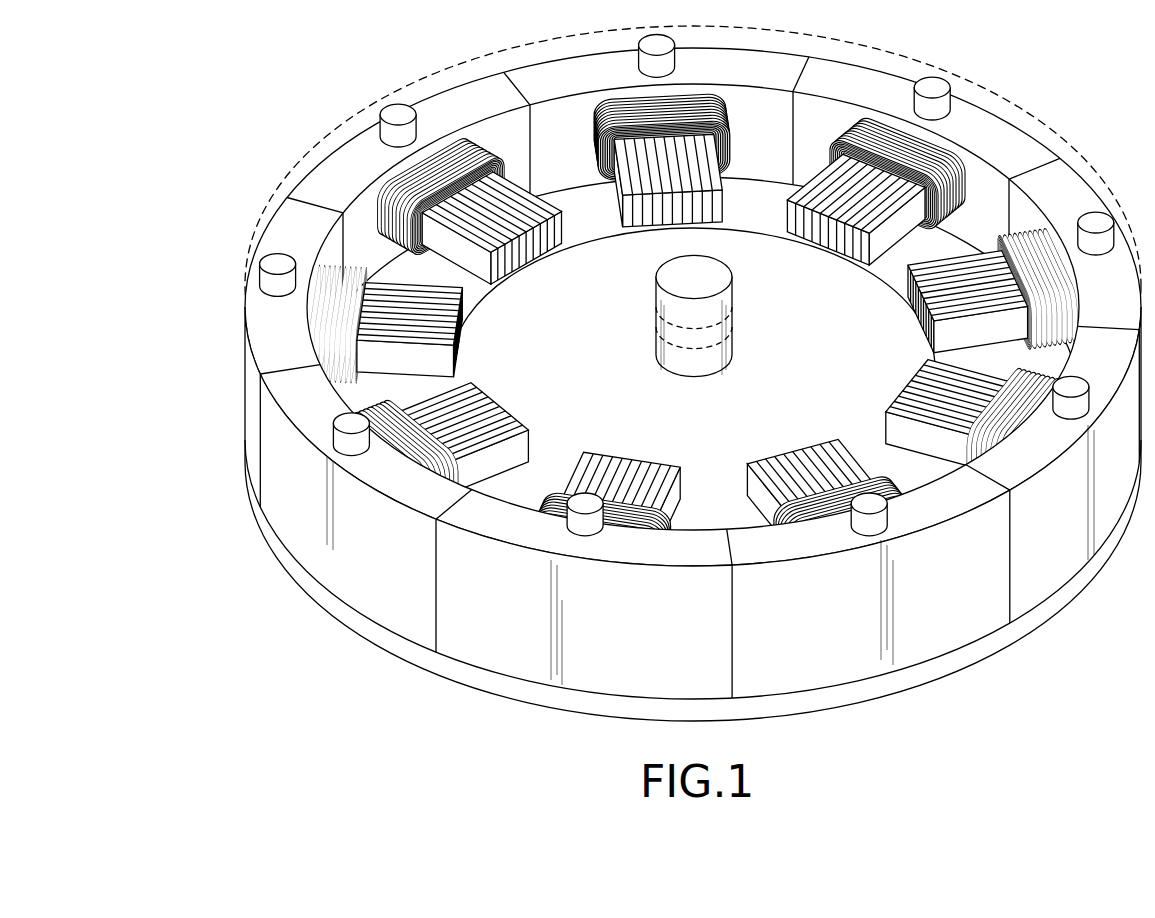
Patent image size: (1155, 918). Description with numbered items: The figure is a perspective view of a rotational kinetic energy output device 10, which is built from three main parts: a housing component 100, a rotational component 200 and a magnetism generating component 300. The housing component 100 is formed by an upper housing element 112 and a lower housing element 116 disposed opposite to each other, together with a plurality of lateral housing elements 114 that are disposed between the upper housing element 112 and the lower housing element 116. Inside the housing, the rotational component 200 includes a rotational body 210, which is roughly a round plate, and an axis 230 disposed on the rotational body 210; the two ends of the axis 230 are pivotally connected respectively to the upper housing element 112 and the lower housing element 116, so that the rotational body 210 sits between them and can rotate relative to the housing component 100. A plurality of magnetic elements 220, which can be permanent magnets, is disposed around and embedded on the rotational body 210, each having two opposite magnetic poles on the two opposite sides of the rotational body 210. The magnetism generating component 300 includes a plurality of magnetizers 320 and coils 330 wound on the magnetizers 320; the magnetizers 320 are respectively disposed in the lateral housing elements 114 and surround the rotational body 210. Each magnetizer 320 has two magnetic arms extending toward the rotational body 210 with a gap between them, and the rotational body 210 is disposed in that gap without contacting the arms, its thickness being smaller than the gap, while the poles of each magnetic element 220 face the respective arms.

The rotational kinetic energy output device 10 is at (157, 55).
The housing component 100 is at (682, 378).
The upper housing element 112 is at (340, 118).
The lateral housing elements 114 is at (302, 182).
The lower housing element 116 is at (297, 582).
The rotational component 200 is at (693, 349).
The rotational body 210 is at (761, 250).
The magnetic element 220 is at (592, 196).
The axis 230 is at (732, 337).
The magnetism generating component 300 is at (693, 349).
The magnetizer 320 is at (510, 288).
The coil 330 is at (455, 148).